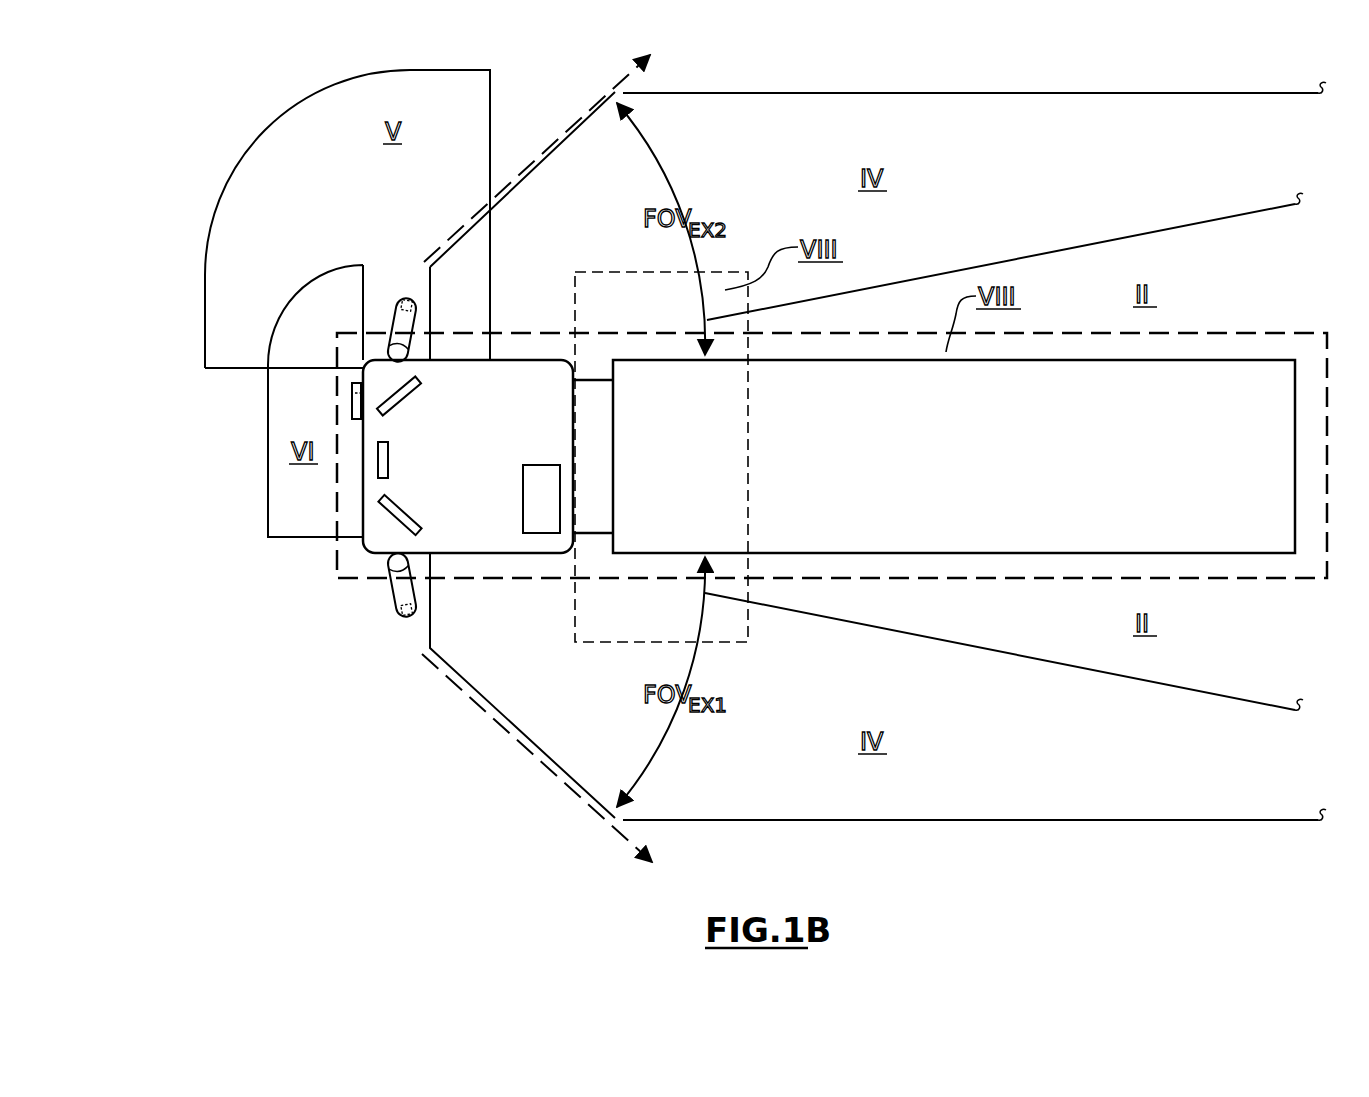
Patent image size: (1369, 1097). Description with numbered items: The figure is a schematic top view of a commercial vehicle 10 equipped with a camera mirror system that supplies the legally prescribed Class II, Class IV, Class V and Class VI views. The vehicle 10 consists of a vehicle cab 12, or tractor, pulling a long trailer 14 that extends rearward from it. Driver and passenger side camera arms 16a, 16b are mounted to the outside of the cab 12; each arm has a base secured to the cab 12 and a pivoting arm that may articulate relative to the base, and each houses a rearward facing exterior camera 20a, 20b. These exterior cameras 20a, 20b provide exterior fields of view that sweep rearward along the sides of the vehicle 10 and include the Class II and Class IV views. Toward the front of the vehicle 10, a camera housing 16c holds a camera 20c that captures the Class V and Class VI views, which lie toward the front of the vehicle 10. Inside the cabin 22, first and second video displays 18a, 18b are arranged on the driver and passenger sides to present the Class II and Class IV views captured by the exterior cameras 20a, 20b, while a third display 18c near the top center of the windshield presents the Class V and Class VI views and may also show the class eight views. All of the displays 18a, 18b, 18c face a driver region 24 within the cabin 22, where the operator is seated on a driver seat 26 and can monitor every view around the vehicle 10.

The commercial vehicle 10 is at (338, 349).
The vehicle cab 12 is at (440, 447).
The trailer 14 is at (1202, 355).
The driver side camera arm 16a is at (408, 592).
The passenger side camera arm 16b is at (399, 303).
The camera housing 16c is at (318, 402).
The first video display 18a is at (418, 514).
The second video display 18b is at (416, 398).
The third display 18c is at (378, 460).
The exterior camera 20a is at (415, 608).
The exterior camera 20b is at (413, 304).
The camera 20c is at (352, 388).
The cabin 22 is at (512, 381).
The driver region 24 is at (515, 490).
The driver seat 26 is at (540, 477).